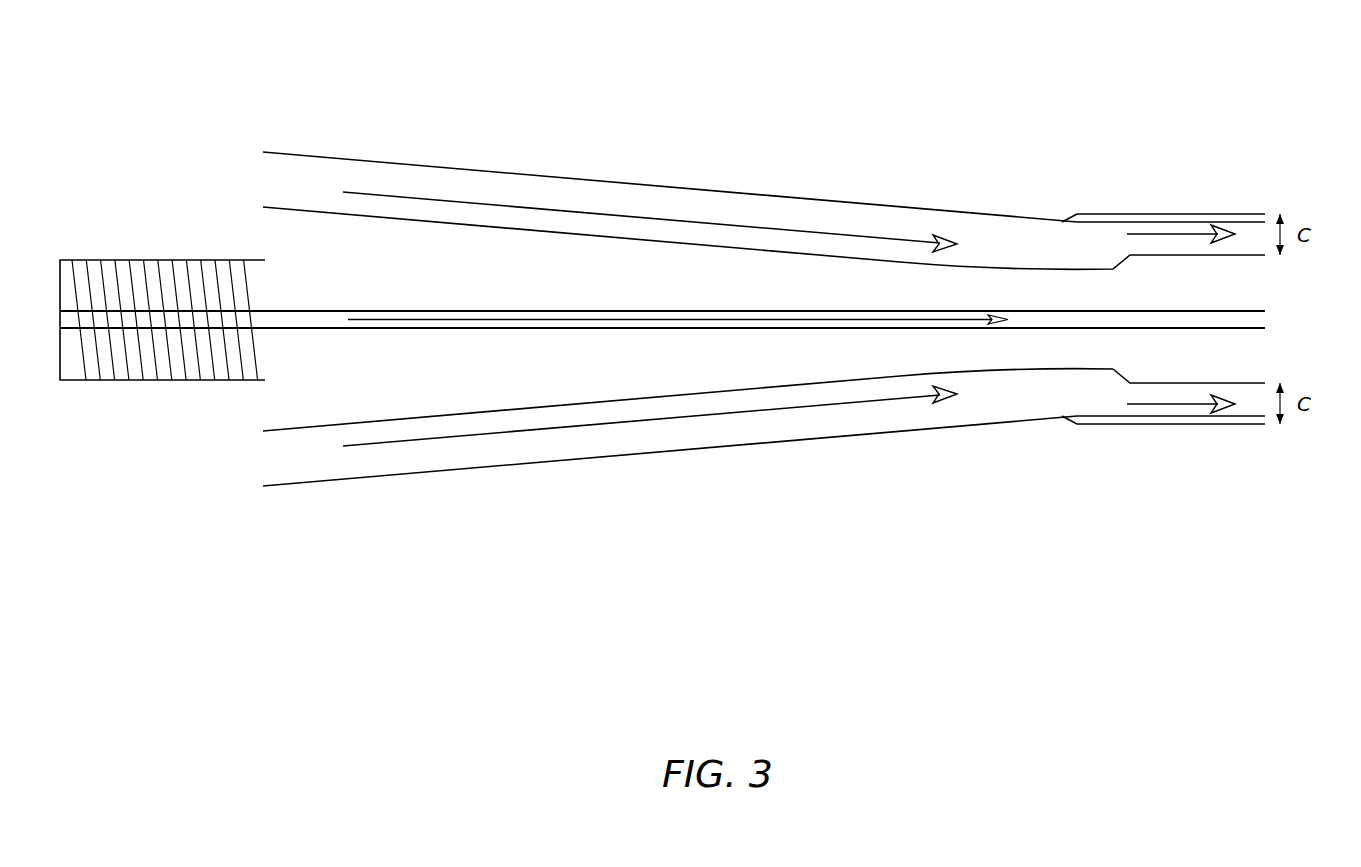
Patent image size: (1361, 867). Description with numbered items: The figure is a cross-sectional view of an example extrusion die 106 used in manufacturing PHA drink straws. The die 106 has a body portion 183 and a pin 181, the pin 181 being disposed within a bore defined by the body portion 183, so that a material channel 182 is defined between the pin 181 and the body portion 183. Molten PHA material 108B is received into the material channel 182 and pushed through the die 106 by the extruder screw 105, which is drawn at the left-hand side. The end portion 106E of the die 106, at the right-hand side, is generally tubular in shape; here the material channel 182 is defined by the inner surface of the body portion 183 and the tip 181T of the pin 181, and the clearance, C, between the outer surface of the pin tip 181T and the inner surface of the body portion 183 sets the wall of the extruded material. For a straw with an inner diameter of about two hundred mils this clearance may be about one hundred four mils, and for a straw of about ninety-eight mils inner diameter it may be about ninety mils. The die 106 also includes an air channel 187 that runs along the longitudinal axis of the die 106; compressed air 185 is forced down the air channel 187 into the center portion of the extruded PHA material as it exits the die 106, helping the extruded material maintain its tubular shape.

The extruder screw 105 is at (124, 258).
The extrusion die 106 is at (924, 144).
The end portion of the die 106E is at (1178, 214).
The molten PHA material 108B is at (632, 215).
The pin 181 is at (303, 238).
The pin tip 181T is at (1223, 353).
The material channel 182 is at (312, 180).
The body portion 183 is at (362, 158).
The compressed air 185 is at (417, 330).
The air channel 187 is at (488, 310).